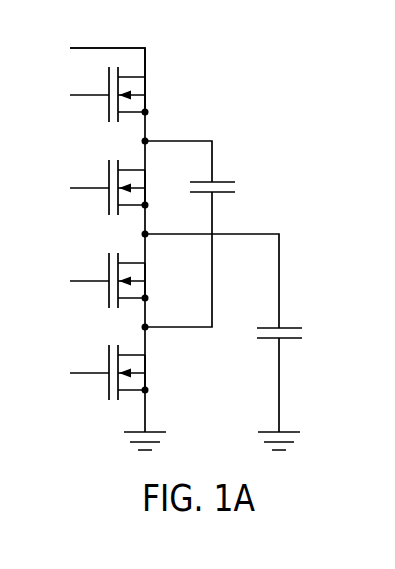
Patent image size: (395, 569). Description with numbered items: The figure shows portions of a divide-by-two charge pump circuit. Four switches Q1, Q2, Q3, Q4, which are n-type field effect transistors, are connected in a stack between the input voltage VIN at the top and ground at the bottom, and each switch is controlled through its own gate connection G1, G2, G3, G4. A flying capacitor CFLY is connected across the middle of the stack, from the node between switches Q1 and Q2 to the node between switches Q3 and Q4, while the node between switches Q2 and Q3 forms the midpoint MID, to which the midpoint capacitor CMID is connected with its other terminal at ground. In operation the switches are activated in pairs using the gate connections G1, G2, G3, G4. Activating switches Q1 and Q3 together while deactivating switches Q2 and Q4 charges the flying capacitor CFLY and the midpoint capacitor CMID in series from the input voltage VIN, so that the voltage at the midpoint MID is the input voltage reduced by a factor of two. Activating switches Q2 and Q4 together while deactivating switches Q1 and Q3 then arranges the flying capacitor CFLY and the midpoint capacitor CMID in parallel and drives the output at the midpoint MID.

The input voltage VIN is at (92, 48).
The switch Q1 is at (142, 94).
The switch Q2 is at (142, 187).
The switch Q3 is at (142, 280).
The switch Q4 is at (142, 372).
The gate connection G1 is at (77, 95).
The gate connection G2 is at (77, 188).
The gate connection G3 is at (77, 281).
The gate connection G4 is at (77, 373).
The flying capacitor CFLY is at (205, 233).
The midpoint MID is at (230, 264).
The midpoint capacitor CMID is at (304, 373).